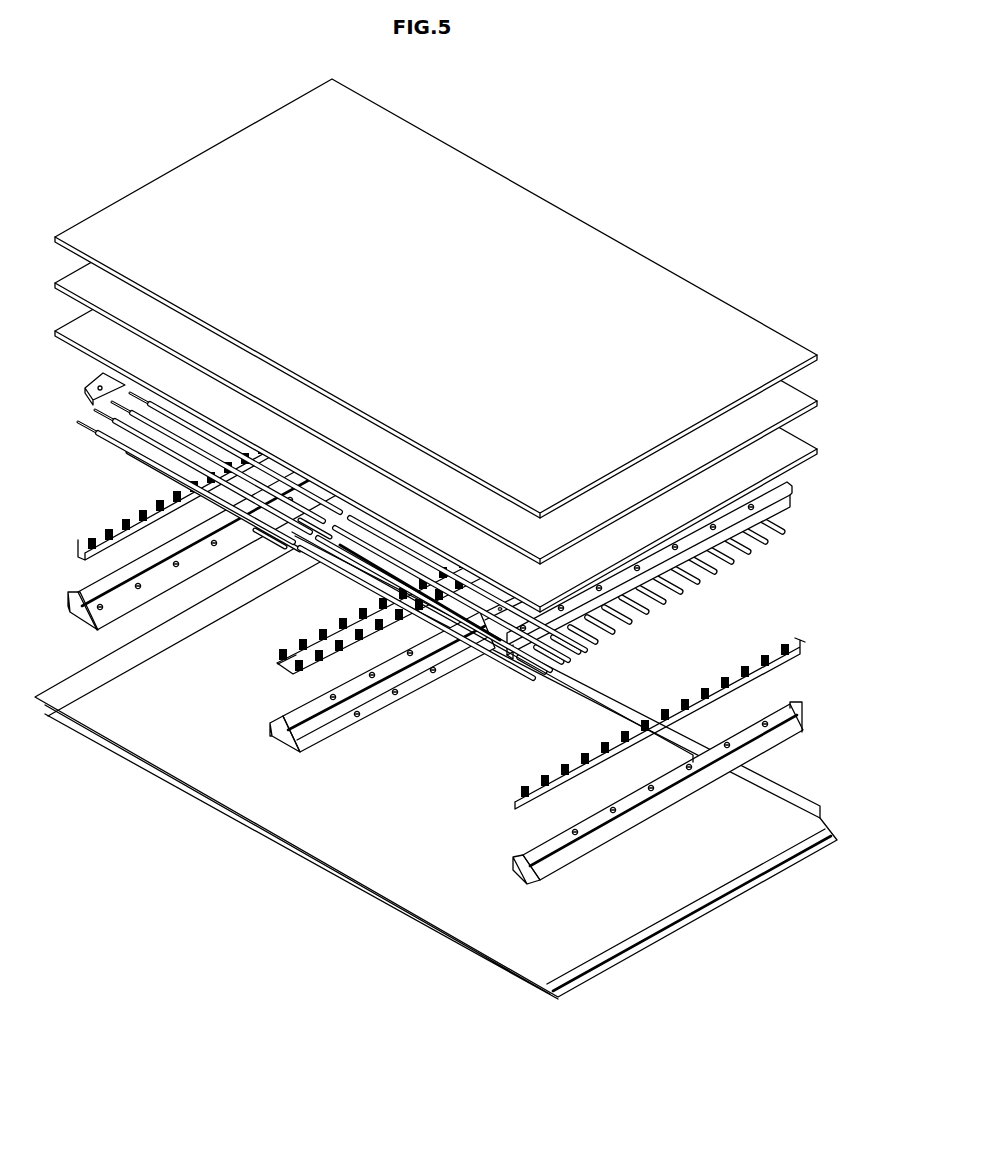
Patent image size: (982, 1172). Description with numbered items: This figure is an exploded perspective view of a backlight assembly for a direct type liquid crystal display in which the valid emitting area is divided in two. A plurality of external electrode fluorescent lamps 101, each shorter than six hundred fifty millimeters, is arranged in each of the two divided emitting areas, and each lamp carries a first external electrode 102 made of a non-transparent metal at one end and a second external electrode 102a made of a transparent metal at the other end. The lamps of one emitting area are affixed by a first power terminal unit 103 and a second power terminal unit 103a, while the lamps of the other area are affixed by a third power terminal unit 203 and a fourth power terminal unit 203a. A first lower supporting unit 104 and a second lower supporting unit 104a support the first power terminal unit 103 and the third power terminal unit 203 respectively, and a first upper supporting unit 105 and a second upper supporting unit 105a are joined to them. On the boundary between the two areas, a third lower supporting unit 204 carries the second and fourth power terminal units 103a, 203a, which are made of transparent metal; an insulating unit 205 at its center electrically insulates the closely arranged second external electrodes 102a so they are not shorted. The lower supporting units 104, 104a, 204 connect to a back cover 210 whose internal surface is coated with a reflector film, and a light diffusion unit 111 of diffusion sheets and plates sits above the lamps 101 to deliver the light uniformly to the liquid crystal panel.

The external electrode fluorescent lamp 101 is at (130, 452).
The first external electrode 102 is at (80, 425).
The second external electrode 102a is at (266, 542).
The first power terminal unit 103 is at (92, 542).
The second power terminal unit 103a is at (282, 665).
The first lower supporting unit 104 is at (80, 618).
The second lower supporting unit 104a is at (516, 864).
The first upper supporting unit 105 is at (103, 379).
The second upper supporting unit 105a is at (796, 488).
The light diffusion unit 111 is at (829, 354).
The third power terminal unit 203 is at (518, 802).
The fourth power terminal unit 203a is at (300, 678).
The third lower supporting unit 204 is at (285, 731).
The insulating unit 205 is at (345, 707).
The back cover 210 is at (772, 828).